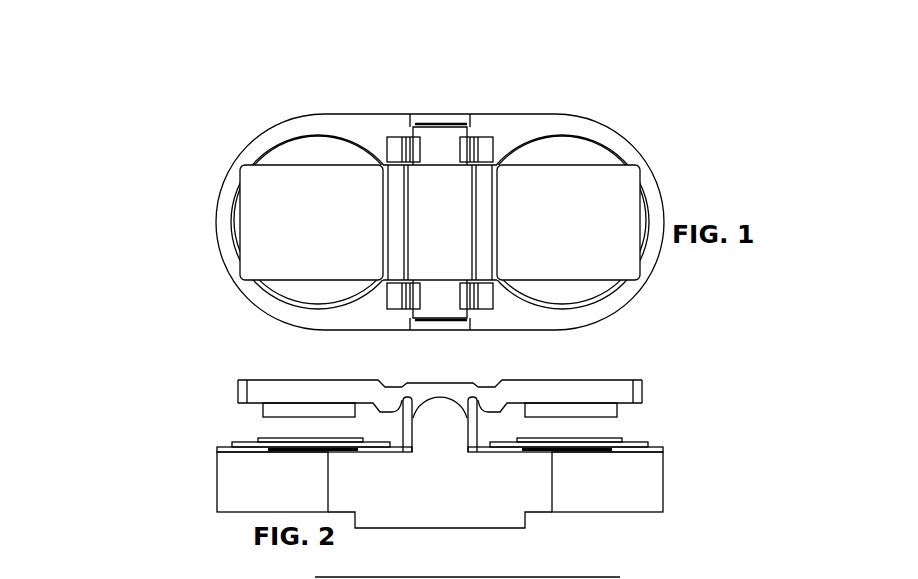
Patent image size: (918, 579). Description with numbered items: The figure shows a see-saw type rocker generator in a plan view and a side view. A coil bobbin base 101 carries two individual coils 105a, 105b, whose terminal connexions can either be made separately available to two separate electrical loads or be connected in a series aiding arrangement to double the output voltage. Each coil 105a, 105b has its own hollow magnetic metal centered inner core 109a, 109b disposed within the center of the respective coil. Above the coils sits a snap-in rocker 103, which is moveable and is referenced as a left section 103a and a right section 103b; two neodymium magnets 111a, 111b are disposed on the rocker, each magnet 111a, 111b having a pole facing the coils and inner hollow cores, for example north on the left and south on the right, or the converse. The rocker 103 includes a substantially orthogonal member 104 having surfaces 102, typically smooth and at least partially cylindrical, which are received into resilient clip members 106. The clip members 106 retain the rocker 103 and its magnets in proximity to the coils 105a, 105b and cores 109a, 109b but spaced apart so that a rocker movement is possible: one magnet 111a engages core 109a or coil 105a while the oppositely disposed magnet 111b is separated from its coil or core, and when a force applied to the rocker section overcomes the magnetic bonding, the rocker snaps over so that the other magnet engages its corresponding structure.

In FIG. 1, the coil bobbin base 101 is at (362, 308).
In FIG. 2, the coil bobbin base 101 is at (300, 476).
In FIG. 1, the surfaces 102 is at (432, 142).
In FIG. 1, the rocker 103 is at (432, 213).
In FIG. 2, the rocker 103 is at (448, 385).
In FIG. 1, the left section 103a is at (311, 218).
In FIG. 2, the left section 103a is at (275, 381).
In FIG. 1, the right section 103b is at (578, 220).
In FIG. 2, the right section 103b is at (590, 381).
In FIG. 1, the substantially orthogonal member 104 is at (437, 145).
In FIG. 1, the first coil 105a is at (323, 152).
In FIG. 2, the first coil 105a is at (243, 452).
In FIG. 1, the second coil 105b is at (555, 287).
In FIG. 2, the second coil 105b is at (657, 446).
In FIG. 1, the resilient clip members 106 is at (397, 152).
In FIG. 2, the resilient clip members 106 is at (410, 405).
In FIG. 2, the first inner core 109a is at (295, 438).
In FIG. 2, the second inner core 109b is at (620, 437).
In FIG. 2, the first magnet 111a is at (277, 412).
In FIG. 2, the second magnet 111b is at (583, 410).